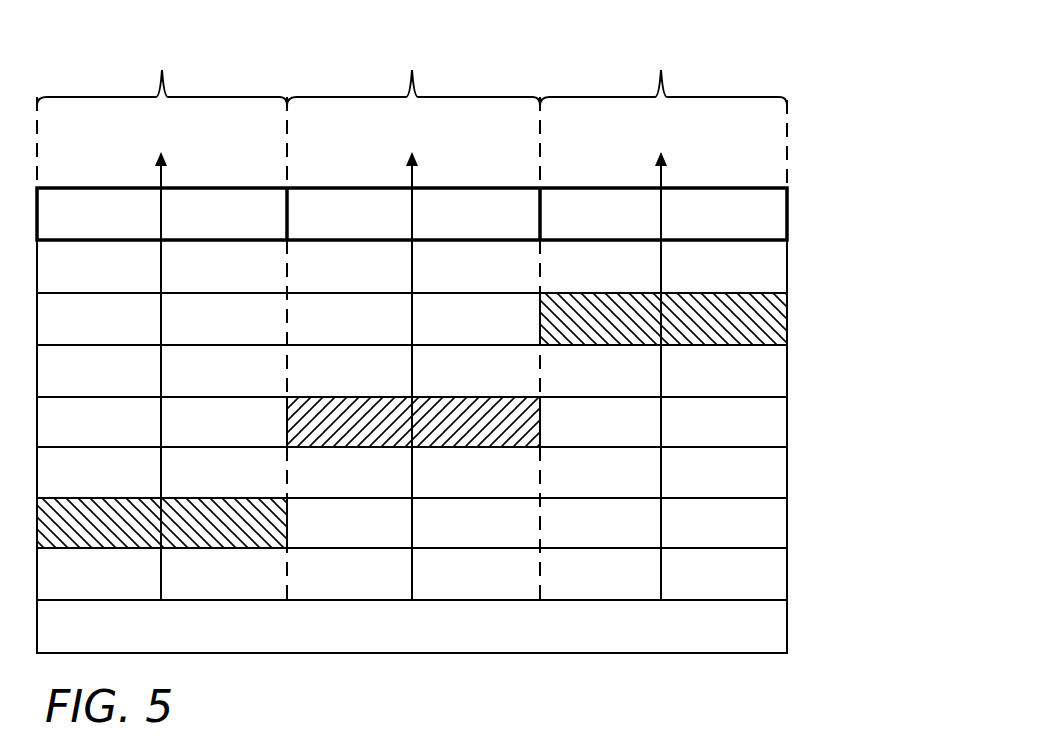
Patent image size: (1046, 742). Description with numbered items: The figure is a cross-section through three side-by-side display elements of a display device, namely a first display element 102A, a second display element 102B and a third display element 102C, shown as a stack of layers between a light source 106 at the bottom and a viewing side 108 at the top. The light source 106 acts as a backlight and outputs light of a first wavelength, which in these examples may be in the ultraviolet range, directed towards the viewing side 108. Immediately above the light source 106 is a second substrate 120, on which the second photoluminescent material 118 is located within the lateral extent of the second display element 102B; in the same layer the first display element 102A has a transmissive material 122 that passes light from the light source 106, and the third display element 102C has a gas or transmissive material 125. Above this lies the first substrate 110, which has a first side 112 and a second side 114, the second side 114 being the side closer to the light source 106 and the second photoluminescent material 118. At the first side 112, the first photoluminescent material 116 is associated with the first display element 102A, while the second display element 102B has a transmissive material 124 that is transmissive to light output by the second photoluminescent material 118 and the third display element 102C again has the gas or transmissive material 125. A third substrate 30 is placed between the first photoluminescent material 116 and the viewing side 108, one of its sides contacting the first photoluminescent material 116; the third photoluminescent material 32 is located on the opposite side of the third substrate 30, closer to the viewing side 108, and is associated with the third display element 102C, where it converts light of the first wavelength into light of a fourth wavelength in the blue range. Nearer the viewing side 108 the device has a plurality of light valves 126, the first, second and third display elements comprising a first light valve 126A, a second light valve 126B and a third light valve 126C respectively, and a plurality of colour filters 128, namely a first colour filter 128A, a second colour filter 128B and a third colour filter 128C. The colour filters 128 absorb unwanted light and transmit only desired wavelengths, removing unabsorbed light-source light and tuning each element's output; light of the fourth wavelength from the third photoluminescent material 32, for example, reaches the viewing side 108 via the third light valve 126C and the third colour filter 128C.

The first display element 102A is at (413, 63).
The second display element 102B is at (162, 63).
The third display element 102C is at (663, 63).
The viewing side 108 is at (699, 160).
The colour filters 128 is at (787, 216).
The first colour filter 128A is at (397, 228).
The second colour filter 128B is at (148, 228).
The third colour filter 128C is at (647, 228).
The light valves 126 is at (790, 270).
The first light valve 126A is at (397, 281).
The second light valve 126B is at (148, 281).
The third light valve 126C is at (647, 281).
The third photoluminescent material 32 is at (787, 315).
The third substrate 30 is at (787, 370).
The first side 112 is at (753, 447).
The first photoluminescent material 116 is at (542, 425).
The transmissive material 124 is at (123, 434).
The gas or transmissive material 125 is at (742, 433).
The first substrate 110 is at (787, 473).
The second side 114 is at (752, 500).
The second photoluminescent material 118 is at (287, 532).
The transmissive material 122 is at (493, 539).
The second substrate 120 is at (786, 573).
The light source 106 is at (783, 630).